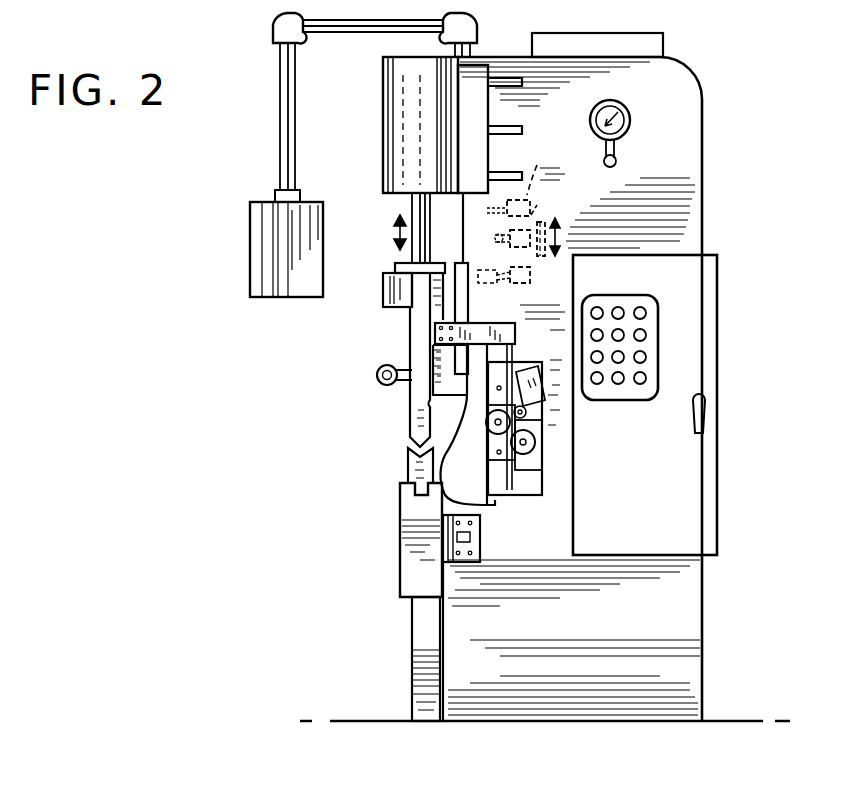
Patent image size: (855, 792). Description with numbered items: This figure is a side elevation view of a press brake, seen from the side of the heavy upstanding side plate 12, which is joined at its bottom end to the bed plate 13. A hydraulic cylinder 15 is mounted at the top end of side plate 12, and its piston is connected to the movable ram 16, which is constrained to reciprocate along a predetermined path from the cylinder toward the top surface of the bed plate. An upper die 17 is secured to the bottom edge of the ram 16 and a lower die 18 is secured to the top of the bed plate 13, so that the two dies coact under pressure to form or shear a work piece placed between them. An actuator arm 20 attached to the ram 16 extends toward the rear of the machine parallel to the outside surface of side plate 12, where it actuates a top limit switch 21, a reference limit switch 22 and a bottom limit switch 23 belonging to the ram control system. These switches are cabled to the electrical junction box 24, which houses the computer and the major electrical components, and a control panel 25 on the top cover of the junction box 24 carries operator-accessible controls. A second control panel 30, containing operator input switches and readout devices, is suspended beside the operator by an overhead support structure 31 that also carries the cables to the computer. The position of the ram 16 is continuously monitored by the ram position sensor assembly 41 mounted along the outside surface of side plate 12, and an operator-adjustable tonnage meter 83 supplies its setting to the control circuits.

The side plate 12 is at (703, 152).
The bed plate 13 is at (402, 565).
The hydraulic cylinder 15 is at (403, 132).
The ram 16 is at (410, 327).
The upper die 17 is at (408, 417).
The lower die 18 is at (410, 455).
The actuator arm 20 is at (480, 290).
The top limit switch 21 is at (539, 168).
The reference limit switch 22 is at (538, 205).
The bottom limit switch 23 is at (522, 283).
The electrical junction box 24 is at (703, 313).
The control panel 25 is at (652, 356).
The second control panel 30 is at (262, 245).
The overhead support structure 31 is at (352, 25).
The ram position sensor assembly 41 is at (538, 480).
The tonnage meter 83 is at (634, 115).